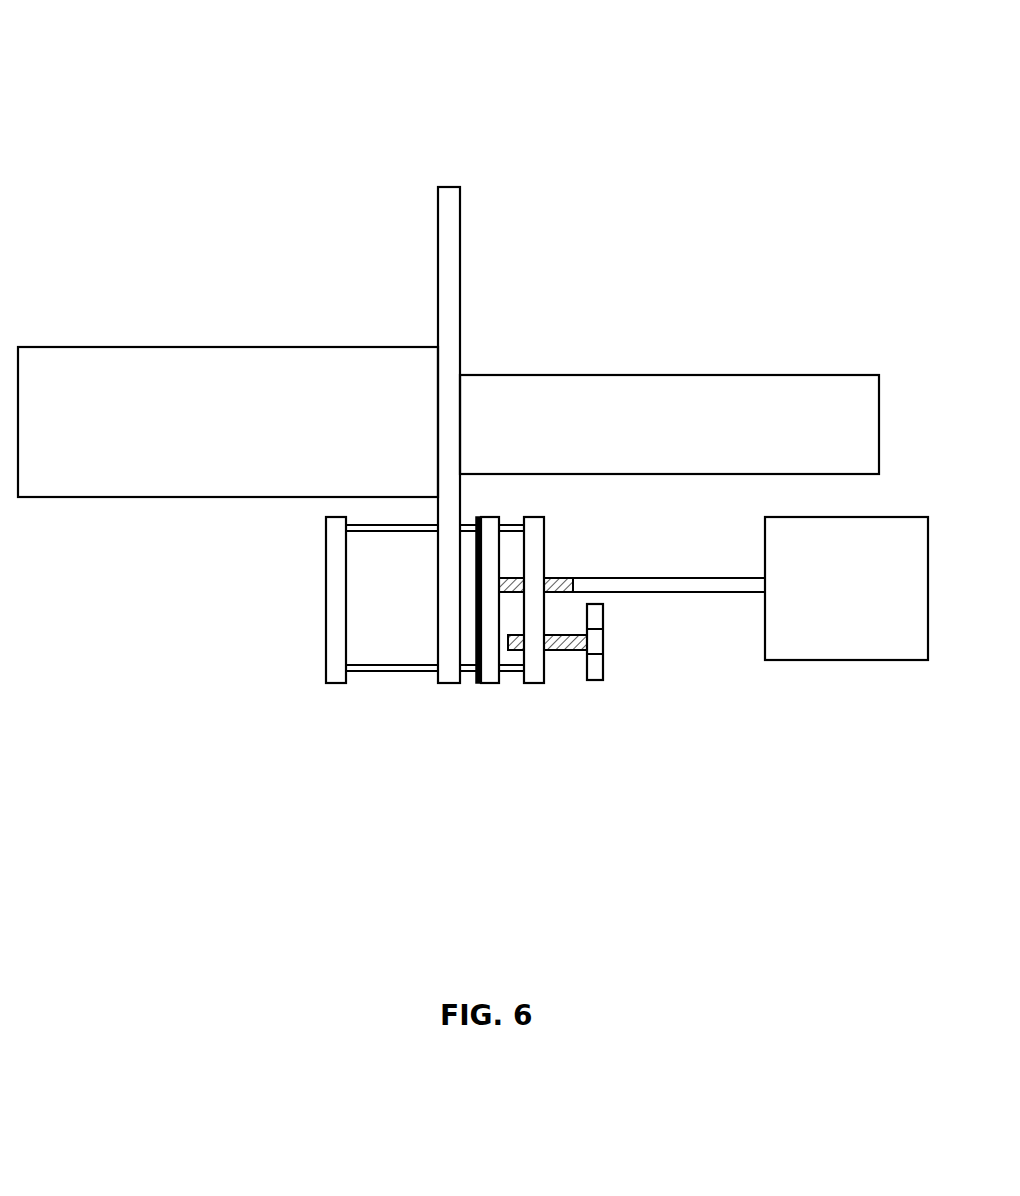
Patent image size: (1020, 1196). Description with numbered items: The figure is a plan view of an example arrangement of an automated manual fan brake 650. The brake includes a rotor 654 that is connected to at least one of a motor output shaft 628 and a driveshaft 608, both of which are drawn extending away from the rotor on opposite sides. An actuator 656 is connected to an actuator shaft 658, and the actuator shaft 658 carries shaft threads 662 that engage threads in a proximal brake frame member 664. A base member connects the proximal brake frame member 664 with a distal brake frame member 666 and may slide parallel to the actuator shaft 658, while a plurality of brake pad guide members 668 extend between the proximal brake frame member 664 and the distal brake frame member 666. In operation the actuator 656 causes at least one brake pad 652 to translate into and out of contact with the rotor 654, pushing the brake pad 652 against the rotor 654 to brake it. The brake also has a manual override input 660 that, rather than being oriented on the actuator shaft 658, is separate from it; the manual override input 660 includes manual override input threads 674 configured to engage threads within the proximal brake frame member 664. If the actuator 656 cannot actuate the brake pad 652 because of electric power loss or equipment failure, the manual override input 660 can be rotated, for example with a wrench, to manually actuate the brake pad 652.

The automated manual fan brake 650 is at (185, 103).
The rotor 654 is at (452, 298).
The driveshaft 608 is at (218, 390).
The motor output shaft 628 is at (673, 408).
The distal brake frame member 666 is at (338, 566).
The brake pad guide members 668 is at (373, 535).
The brake pad 652 is at (492, 683).
The proximal brake frame member 664 is at (535, 683).
The shaft threads 662 is at (562, 578).
The actuator shaft 658 is at (693, 583).
The manual override input threads 674 is at (563, 647).
The manual override input 660 is at (603, 641).
The actuator 656 is at (868, 642).